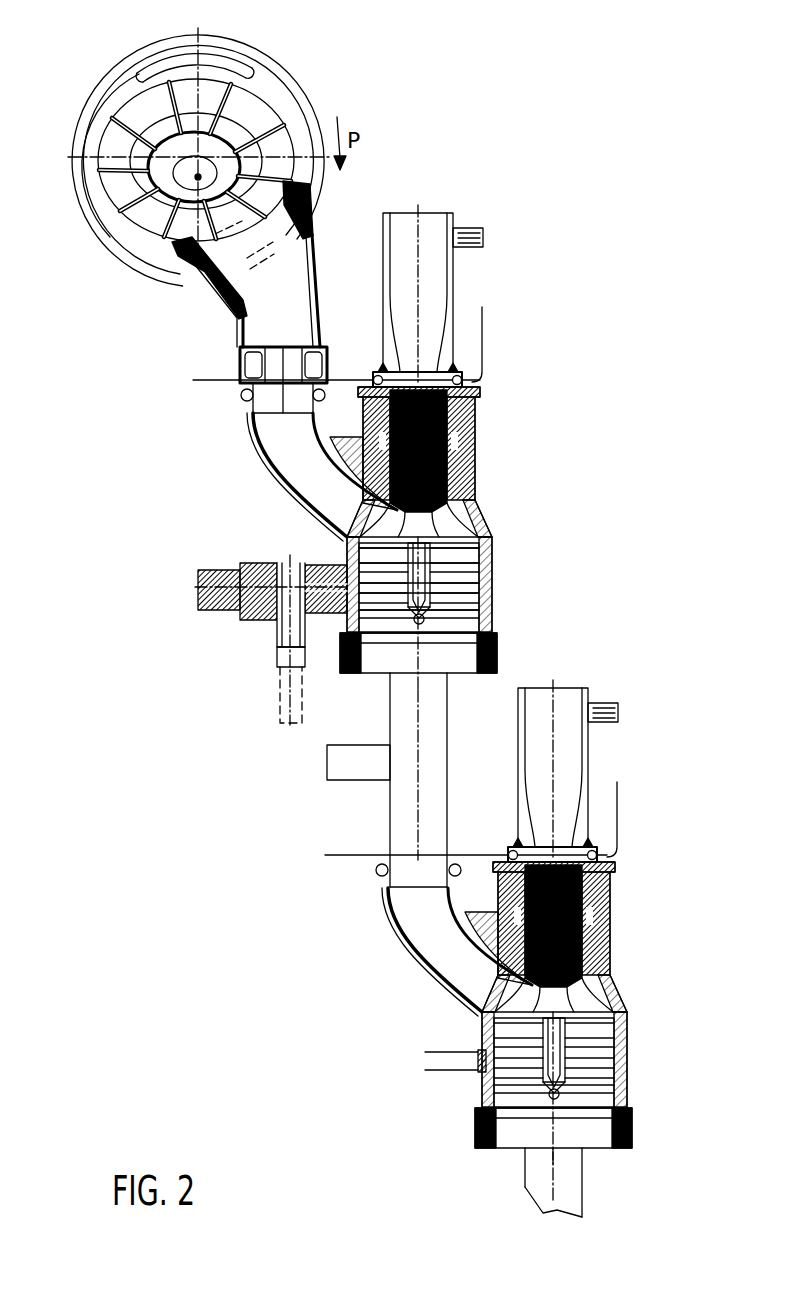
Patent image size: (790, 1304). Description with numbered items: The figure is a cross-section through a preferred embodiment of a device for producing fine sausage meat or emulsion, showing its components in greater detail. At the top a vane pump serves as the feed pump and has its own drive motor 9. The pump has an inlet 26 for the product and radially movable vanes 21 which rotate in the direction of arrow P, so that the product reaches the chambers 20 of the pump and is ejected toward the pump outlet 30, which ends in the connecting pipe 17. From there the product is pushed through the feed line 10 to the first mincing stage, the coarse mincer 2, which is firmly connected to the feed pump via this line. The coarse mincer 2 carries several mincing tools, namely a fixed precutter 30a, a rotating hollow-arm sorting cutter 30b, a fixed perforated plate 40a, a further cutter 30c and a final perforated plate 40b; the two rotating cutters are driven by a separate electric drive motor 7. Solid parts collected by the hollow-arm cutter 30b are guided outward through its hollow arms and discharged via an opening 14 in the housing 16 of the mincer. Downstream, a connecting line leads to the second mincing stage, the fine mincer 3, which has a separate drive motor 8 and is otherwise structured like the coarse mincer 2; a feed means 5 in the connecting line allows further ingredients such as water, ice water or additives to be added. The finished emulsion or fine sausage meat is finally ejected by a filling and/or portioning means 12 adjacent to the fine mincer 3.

The coarse mincer 2 is at (477, 458).
The fine mincer 3 is at (613, 940).
The feed means 5 is at (360, 783).
The drive motor 7 is at (437, 277).
The drive motor 8 is at (573, 750).
The drive motor 9 is at (308, 97).
The feed line 10 is at (275, 487).
The filling and/or portioning means 12 is at (582, 1178).
The opening 14 is at (328, 607).
The housing 16 is at (347, 552).
The connecting pipe 17 is at (223, 303).
The chambers 20 is at (196, 160).
The radially movable vanes 21 is at (243, 57).
The inlet 26 is at (148, 58).
The pump outlet 30 is at (307, 217).
The fixed precutter 30a is at (492, 548).
The hollow-arm cutter 30b is at (492, 565).
The cutter 30c is at (492, 595).
The fixed perforated plate 40a is at (492, 580).
The final perforated plate 40b is at (492, 610).